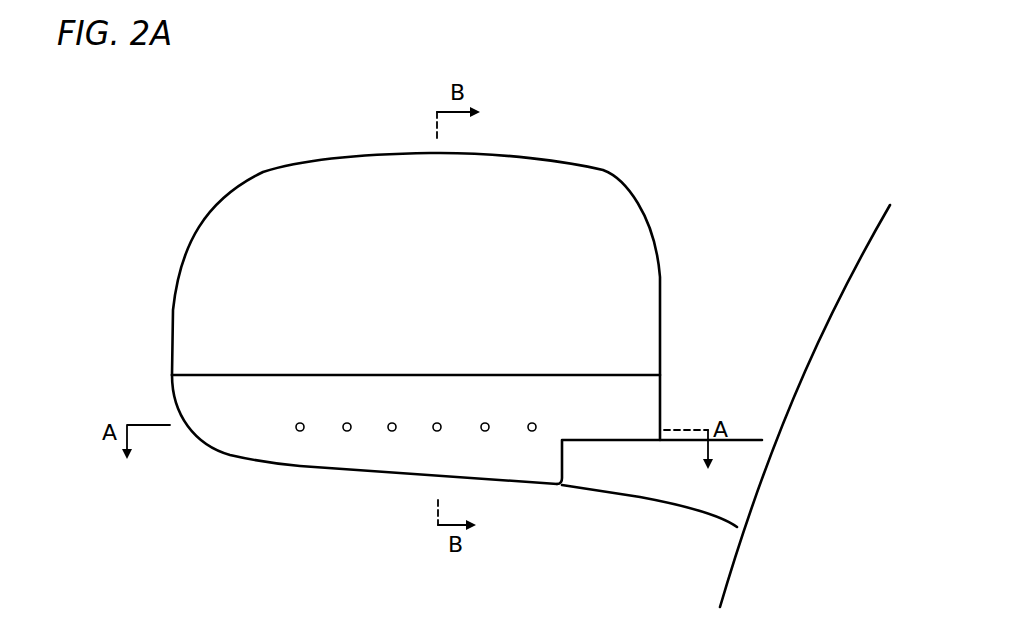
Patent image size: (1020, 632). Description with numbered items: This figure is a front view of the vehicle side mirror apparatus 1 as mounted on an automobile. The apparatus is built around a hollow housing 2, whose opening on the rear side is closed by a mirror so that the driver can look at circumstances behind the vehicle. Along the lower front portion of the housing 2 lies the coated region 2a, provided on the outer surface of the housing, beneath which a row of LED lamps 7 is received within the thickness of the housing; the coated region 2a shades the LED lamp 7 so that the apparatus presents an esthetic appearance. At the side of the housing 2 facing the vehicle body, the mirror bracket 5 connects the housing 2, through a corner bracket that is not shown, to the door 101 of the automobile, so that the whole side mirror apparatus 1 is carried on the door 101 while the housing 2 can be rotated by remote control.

The vehicle side mirror apparatus 1 is at (268, 144).
The housing 2 is at (565, 177).
The coated region 2a is at (240, 438).
The mirror bracket 5 is at (587, 478).
The LED lamp 7 is at (390, 432).
The door 101 is at (743, 562).